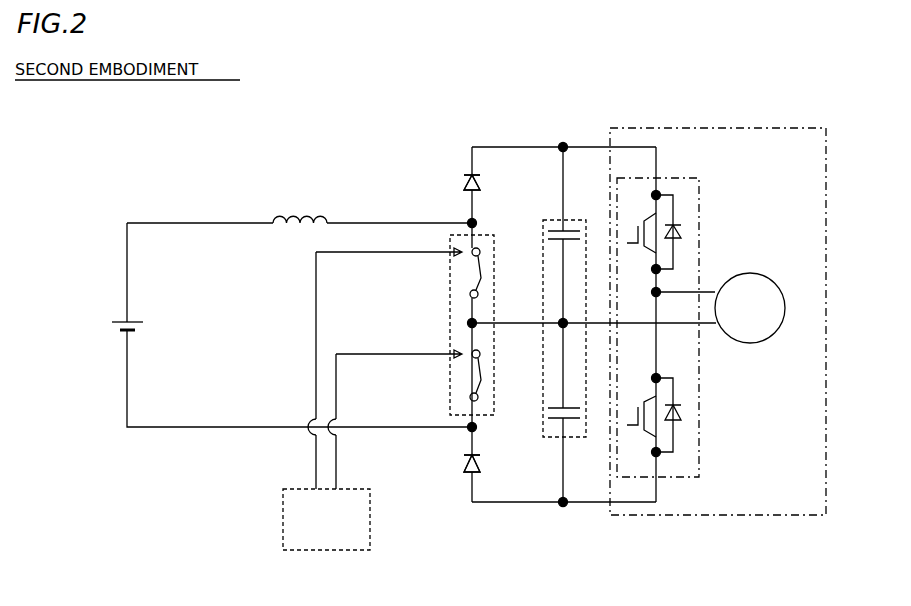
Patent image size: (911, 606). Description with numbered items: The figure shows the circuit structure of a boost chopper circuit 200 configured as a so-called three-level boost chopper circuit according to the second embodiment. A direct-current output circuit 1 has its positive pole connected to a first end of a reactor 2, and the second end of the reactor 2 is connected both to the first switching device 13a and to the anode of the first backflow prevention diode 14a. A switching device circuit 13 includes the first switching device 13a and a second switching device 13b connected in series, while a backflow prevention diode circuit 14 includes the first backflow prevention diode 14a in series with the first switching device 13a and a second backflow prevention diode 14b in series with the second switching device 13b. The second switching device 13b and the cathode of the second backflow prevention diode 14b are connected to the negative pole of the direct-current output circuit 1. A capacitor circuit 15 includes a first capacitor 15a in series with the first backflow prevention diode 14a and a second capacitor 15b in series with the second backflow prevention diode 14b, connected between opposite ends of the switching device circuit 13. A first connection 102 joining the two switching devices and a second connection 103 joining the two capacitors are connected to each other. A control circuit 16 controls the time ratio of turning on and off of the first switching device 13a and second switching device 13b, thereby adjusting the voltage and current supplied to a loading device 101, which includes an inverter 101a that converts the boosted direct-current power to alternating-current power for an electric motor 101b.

The boost chopper circuit 200 is at (106, 163).
The direct-current output circuit 1 is at (118, 320).
The reactor 2 is at (275, 212).
The switching device circuit 13 is at (458, 232).
The first switching device 13a is at (478, 272).
The second switching device 13b is at (476, 378).
The backflow prevention diode circuit 14 is at (421, 186).
The first backflow prevention diode 14a is at (463, 182).
The second backflow prevention diode 14b is at (463, 462).
The capacitor circuit 15 is at (577, 214).
The first capacitor 15a is at (560, 230).
The second capacitor 15b is at (558, 425).
The control circuit 16 is at (283, 515).
The loading device 101 is at (707, 126).
The inverter 101a is at (699, 202).
The electric motor 101b is at (752, 265).
The first connection 102 is at (468, 324).
The second connection 103 is at (560, 322).